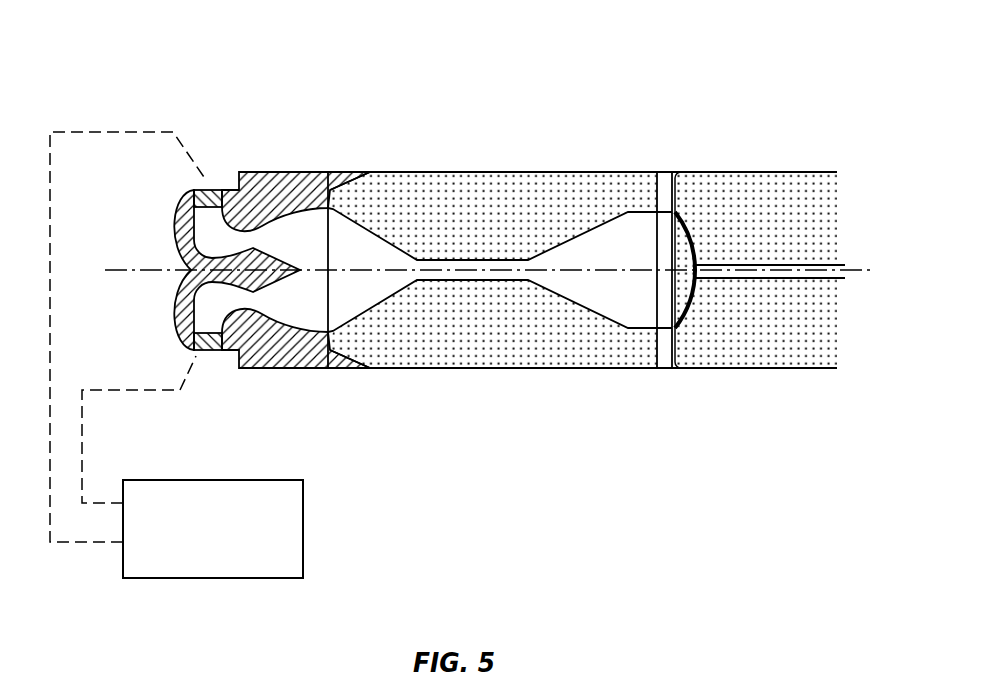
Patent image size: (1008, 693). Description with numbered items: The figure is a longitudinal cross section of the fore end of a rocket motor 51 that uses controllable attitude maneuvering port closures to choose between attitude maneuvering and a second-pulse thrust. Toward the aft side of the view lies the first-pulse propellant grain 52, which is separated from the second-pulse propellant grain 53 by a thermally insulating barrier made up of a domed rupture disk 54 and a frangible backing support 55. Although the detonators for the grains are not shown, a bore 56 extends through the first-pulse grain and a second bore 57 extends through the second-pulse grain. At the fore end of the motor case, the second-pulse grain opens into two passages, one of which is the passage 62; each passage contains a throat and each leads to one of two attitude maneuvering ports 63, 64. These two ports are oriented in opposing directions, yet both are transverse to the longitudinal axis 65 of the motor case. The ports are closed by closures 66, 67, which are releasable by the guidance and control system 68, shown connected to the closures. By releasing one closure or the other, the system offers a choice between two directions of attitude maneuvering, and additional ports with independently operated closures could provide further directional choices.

The rocket motor 51 is at (577, 57).
The first-pulse propellant grain 52 is at (767, 198).
The second-pulse propellant grain 53 is at (473, 203).
The domed rupture disk 54 is at (689, 228).
The frangible backing support 55 is at (683, 252).
The bore 56 is at (757, 276).
The second bore 57 is at (443, 280).
The passage 62 is at (297, 317).
The attitude maneuvering port 63 is at (212, 181).
The attitude maneuvering port 64 is at (217, 357).
The longitudinal axis 65 is at (158, 272).
The closure 66 is at (203, 190).
The closure 67 is at (207, 352).
The guidance and control system 68 is at (303, 510).